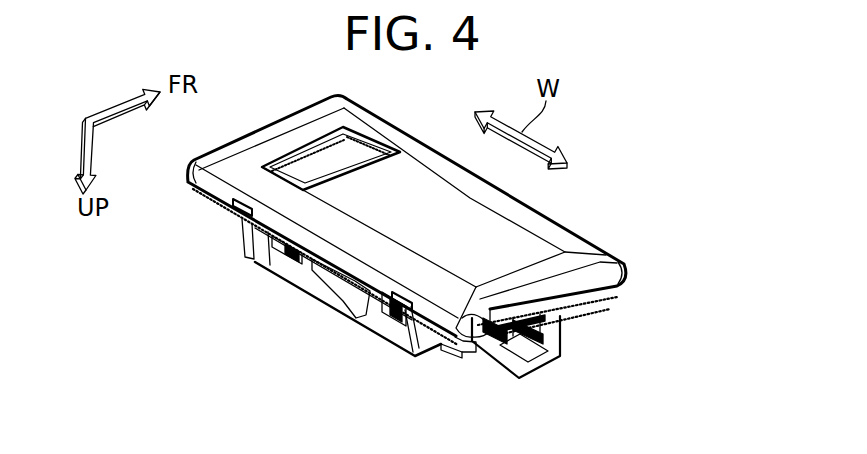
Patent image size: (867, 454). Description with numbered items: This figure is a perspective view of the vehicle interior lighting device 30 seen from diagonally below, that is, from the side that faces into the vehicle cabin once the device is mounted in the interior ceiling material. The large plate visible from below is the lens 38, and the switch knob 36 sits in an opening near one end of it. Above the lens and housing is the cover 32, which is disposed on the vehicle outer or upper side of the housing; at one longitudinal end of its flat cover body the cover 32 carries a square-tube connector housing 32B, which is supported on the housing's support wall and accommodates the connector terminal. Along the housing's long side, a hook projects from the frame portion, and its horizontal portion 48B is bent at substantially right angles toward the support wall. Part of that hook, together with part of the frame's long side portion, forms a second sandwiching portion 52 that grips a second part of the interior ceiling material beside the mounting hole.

The vehicle interior lighting device 30 is at (634, 158).
The lens 38 is at (500, 227).
The switch knob 36 is at (323, 157).
The second sandwiching portion 52 is at (315, 280).
The horizontal portion 48B is at (326, 283).
The cover 32 is at (458, 367).
The connector housing 32B is at (542, 367).